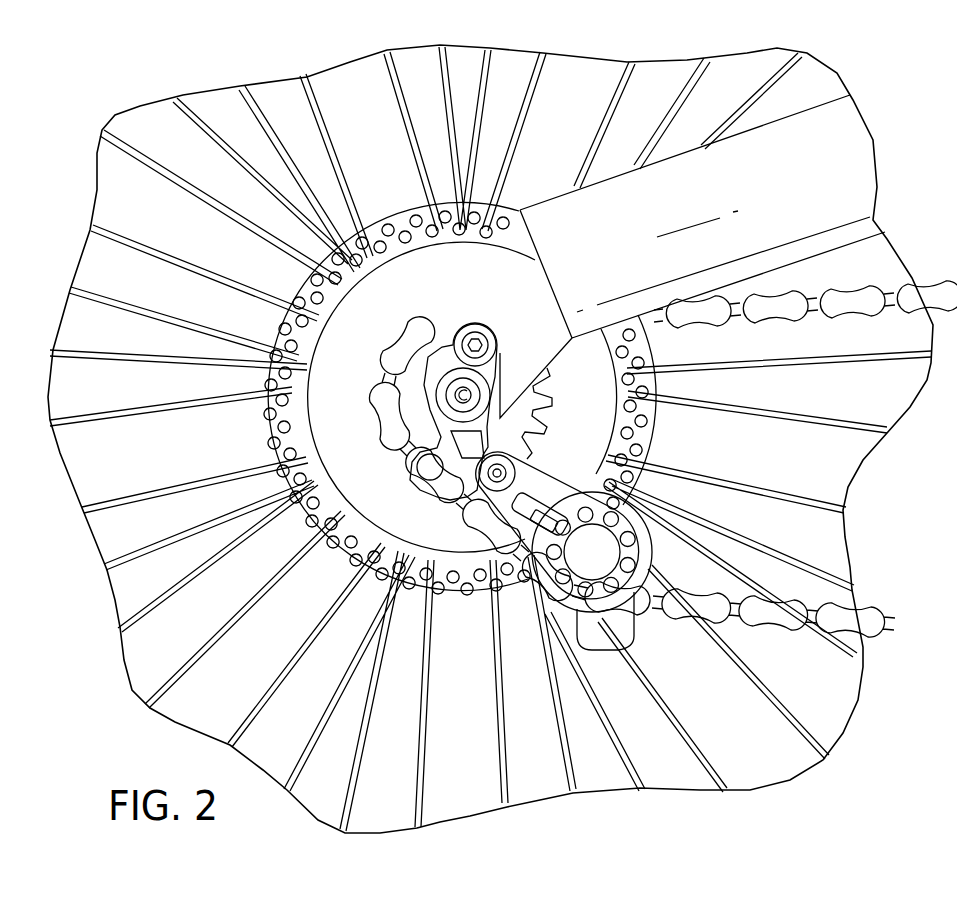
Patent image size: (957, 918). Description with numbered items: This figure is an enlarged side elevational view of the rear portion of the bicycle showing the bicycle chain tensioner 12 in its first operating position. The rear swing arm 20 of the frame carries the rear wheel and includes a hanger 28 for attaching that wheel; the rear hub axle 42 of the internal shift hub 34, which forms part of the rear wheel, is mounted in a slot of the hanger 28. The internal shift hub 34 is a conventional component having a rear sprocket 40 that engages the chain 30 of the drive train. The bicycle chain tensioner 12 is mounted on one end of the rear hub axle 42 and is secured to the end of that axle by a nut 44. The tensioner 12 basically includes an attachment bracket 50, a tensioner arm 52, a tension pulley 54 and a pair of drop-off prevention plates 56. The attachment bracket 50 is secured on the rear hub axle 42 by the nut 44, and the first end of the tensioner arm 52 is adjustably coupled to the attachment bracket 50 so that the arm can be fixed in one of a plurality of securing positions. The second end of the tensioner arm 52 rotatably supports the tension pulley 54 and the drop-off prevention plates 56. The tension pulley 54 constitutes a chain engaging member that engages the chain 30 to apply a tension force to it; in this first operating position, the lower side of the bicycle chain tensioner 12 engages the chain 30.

The bicycle chain tensioner 12 is at (523, 490).
The rear swing arm 20 is at (815, 104).
The hanger 28 is at (443, 345).
The chain 30 is at (875, 285).
The internal shift hub 34 is at (408, 270).
The rear sprocket 40 is at (540, 432).
The rear hub axle 42 is at (462, 395).
The nut 44 is at (487, 390).
The attachment bracket 50 is at (425, 422).
The tensioner arm 52 is at (470, 512).
The tension pulley 54 is at (620, 527).
The drop-off prevention plates 56 is at (600, 645).